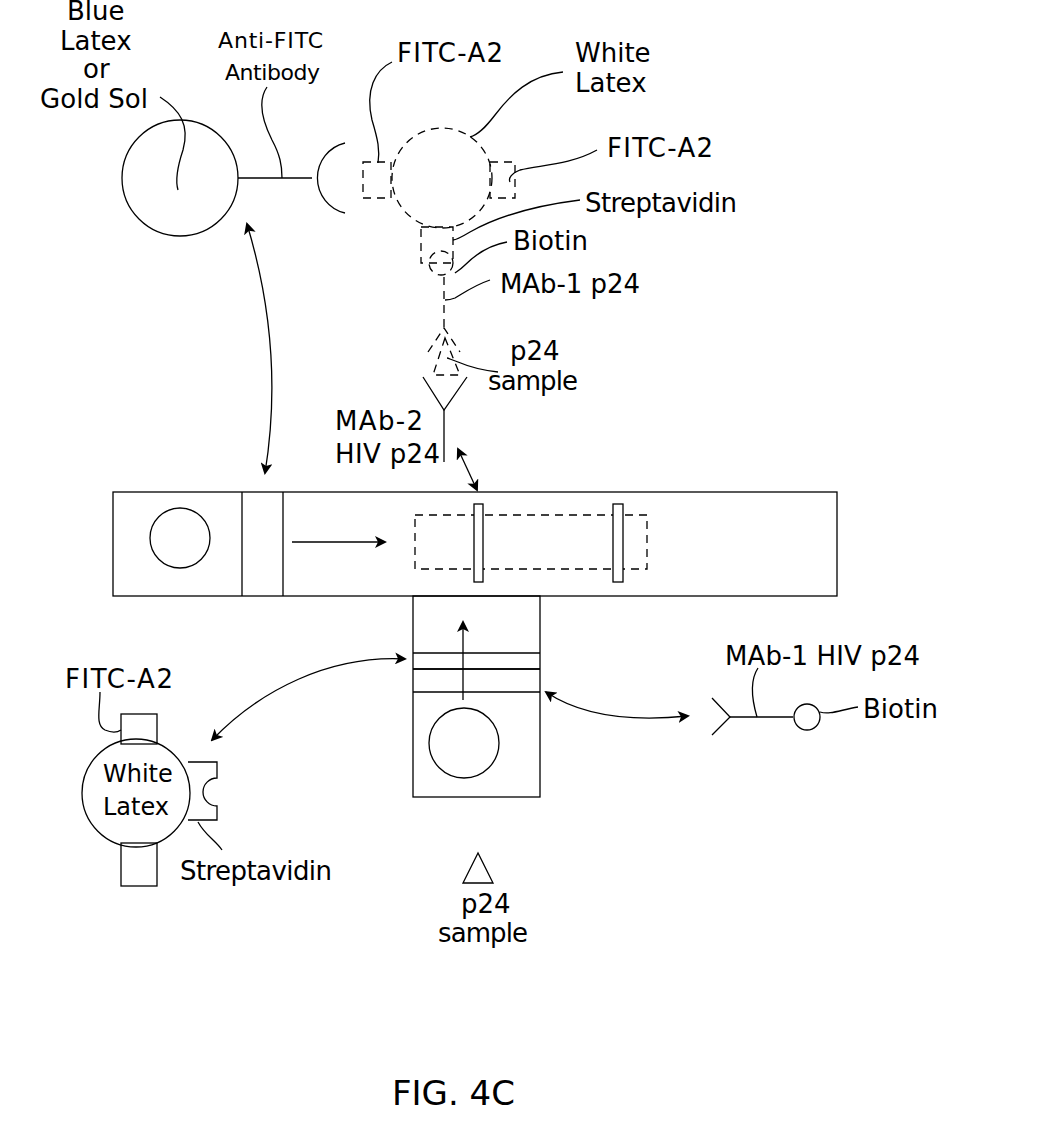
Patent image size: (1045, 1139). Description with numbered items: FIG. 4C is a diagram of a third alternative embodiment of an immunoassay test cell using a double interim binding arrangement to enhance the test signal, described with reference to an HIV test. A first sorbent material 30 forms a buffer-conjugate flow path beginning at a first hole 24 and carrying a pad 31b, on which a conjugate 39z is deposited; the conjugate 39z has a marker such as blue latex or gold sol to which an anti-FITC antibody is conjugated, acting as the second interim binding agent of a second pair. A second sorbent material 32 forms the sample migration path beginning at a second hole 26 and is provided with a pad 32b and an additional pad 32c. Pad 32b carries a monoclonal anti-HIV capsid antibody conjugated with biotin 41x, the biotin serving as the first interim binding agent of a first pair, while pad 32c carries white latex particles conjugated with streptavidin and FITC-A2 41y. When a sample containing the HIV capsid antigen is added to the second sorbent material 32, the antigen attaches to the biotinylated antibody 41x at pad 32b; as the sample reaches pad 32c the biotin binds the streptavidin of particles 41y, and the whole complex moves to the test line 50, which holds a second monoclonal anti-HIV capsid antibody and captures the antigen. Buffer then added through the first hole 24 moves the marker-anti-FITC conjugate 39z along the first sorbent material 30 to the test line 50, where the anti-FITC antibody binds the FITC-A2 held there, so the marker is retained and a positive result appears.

The first hole 24 is at (178, 512).
The pad 31b is at (240, 513).
The conjugate 39z is at (258, 597).
The first sorbent material 30 is at (365, 585).
The test line 50 is at (483, 548).
The particles conjugated with streptavidin and FITC-A2 41y is at (528, 665).
The MAb-1 HIV p24 antibody conjugated with biotin 41x is at (540, 681).
The pad 32c is at (430, 672).
The pad 32b is at (425, 694).
The second sorbent material 32 is at (530, 742).
The second hole 26 is at (440, 758).